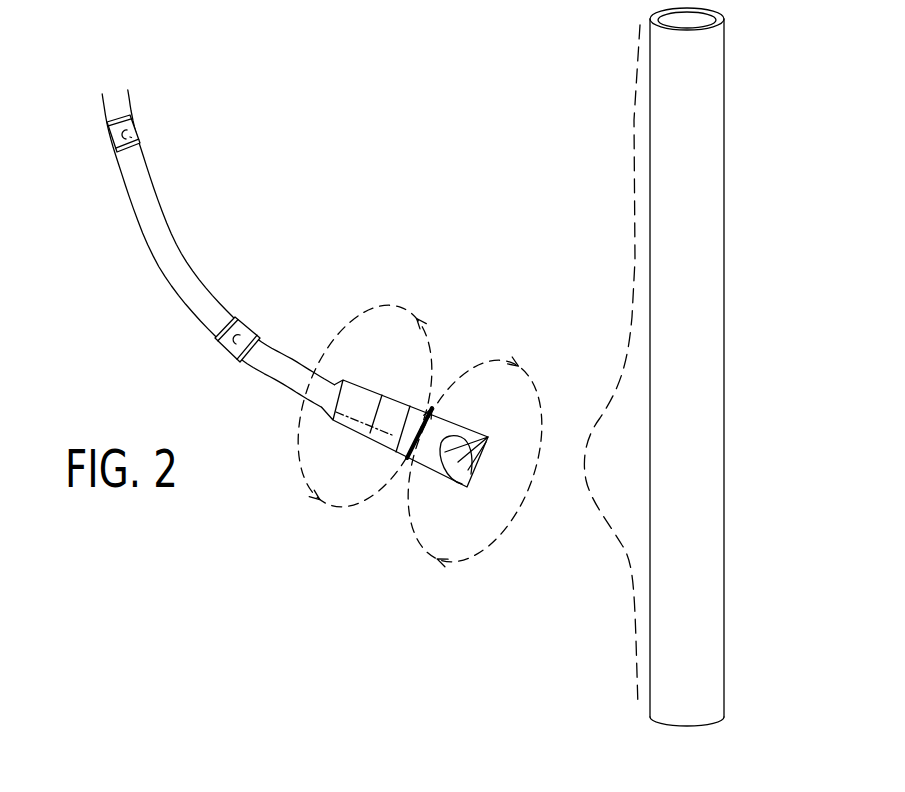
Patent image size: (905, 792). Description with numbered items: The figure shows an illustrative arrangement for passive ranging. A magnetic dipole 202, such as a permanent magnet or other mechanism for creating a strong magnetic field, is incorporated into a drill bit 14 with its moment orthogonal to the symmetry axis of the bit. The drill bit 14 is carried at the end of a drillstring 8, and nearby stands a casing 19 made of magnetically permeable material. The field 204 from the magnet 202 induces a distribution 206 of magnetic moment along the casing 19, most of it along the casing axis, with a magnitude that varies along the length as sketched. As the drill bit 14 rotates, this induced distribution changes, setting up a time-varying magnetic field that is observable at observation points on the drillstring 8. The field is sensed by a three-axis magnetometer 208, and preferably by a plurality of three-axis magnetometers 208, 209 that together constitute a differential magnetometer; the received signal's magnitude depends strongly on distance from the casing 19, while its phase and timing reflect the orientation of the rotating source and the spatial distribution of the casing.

The drillstring 8 is at (170, 292).
The drill bit 14 is at (450, 478).
The casing 19 is at (723, 677).
The magnetic dipole 202 is at (408, 447).
The field 204 is at (410, 538).
The distribution of magnetic moment 206 is at (630, 317).
The three-axis magnetometer 208 is at (232, 338).
The three-axis magnetometer 209 is at (111, 140).